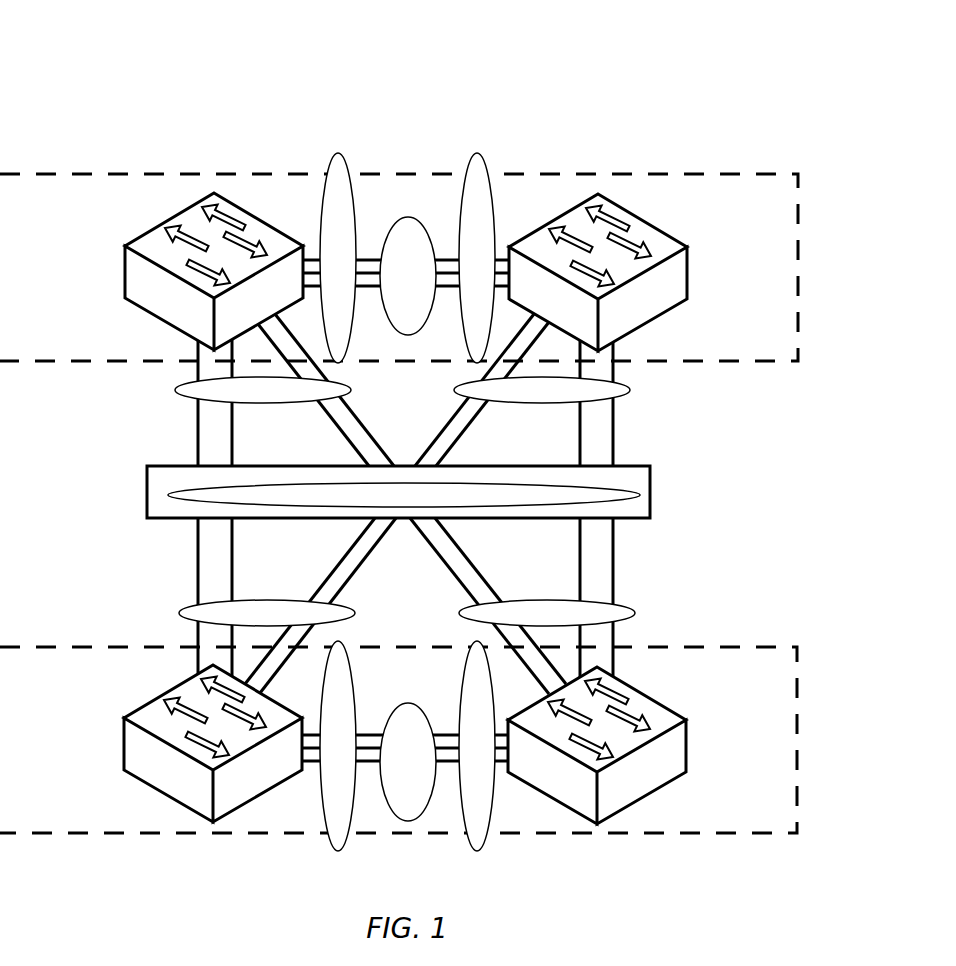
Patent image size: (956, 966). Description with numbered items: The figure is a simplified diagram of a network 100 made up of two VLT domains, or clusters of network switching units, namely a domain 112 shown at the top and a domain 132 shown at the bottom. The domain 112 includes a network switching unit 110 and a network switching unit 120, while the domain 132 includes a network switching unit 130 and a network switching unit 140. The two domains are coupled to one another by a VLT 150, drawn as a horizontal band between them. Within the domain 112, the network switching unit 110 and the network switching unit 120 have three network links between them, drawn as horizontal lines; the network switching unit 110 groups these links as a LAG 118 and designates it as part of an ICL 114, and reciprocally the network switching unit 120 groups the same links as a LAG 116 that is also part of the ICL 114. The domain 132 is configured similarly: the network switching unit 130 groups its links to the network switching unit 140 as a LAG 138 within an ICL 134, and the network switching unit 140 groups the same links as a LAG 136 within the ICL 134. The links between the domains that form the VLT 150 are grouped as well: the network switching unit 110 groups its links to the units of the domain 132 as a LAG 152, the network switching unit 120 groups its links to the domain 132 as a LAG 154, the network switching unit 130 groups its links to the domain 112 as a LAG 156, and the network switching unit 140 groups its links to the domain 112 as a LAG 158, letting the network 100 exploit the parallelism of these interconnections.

The network 100 is at (456, 434).
The network switching unit 110 is at (157, 271).
The domain 112 is at (798, 249).
The ICL 114 is at (406, 276).
The LAG 116 is at (477, 258).
The LAG 118 is at (338, 258).
The network switching unit 120 is at (643, 272).
The network switching unit 130 is at (166, 743).
The domain 132 is at (797, 722).
The ICL 134 is at (406, 762).
The LAG 136 is at (477, 746).
The LAG 138 is at (338, 746).
The network switching unit 140 is at (641, 745).
The VLT 150 is at (398, 492).
The LAG 152 is at (284, 390).
The LAG 154 is at (522, 390).
The LAG 156 is at (287, 605).
The LAG 158 is at (522, 606).